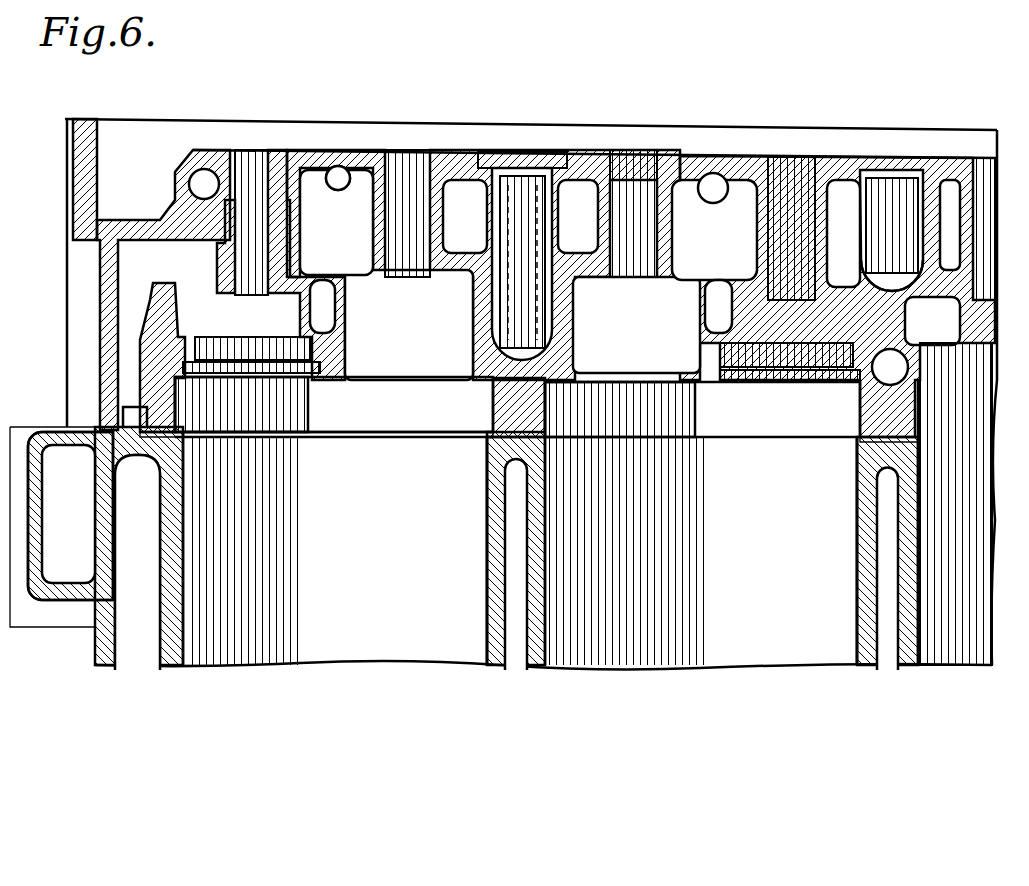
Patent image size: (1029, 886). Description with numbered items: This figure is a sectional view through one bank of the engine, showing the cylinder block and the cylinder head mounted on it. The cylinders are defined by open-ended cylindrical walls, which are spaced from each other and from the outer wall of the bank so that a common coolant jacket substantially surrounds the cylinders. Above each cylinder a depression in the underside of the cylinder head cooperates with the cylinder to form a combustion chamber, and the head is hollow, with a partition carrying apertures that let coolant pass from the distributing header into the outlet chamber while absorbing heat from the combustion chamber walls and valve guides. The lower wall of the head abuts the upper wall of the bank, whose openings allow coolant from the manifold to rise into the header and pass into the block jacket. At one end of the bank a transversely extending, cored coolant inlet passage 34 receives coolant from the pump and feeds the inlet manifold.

The coolant inlet passage 34 is at (57, 452).